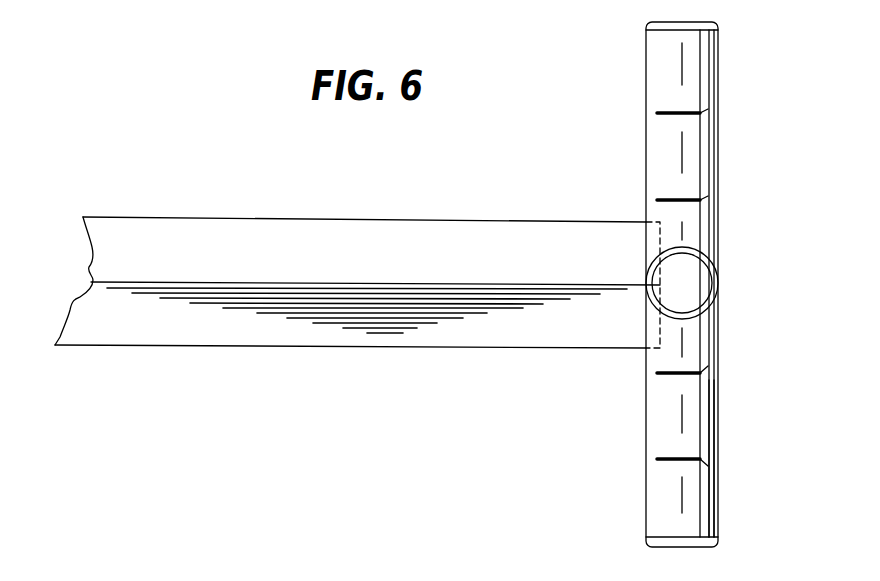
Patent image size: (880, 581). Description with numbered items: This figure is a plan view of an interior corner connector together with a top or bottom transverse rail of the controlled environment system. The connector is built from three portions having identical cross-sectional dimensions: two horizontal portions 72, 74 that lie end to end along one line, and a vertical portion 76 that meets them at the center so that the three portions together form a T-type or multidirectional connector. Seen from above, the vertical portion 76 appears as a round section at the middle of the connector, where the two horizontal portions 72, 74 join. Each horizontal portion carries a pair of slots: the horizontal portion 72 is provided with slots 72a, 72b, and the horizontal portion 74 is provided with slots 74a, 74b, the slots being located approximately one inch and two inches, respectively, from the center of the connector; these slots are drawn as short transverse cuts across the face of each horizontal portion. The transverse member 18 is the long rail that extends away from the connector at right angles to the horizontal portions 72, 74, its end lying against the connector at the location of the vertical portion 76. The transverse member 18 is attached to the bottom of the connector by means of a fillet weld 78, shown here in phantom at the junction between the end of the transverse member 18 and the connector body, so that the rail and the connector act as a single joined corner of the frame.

The transverse member 18 is at (398, 220).
The horizontal portion 72 is at (705, 420).
The slot 72a is at (703, 371).
The slot 72b is at (702, 462).
The horizontal portion 74 is at (710, 127).
The slot 74a is at (666, 198).
The slot 74b is at (666, 112).
The vertical portion 76 is at (697, 275).
The fillet weld 78 is at (652, 234).